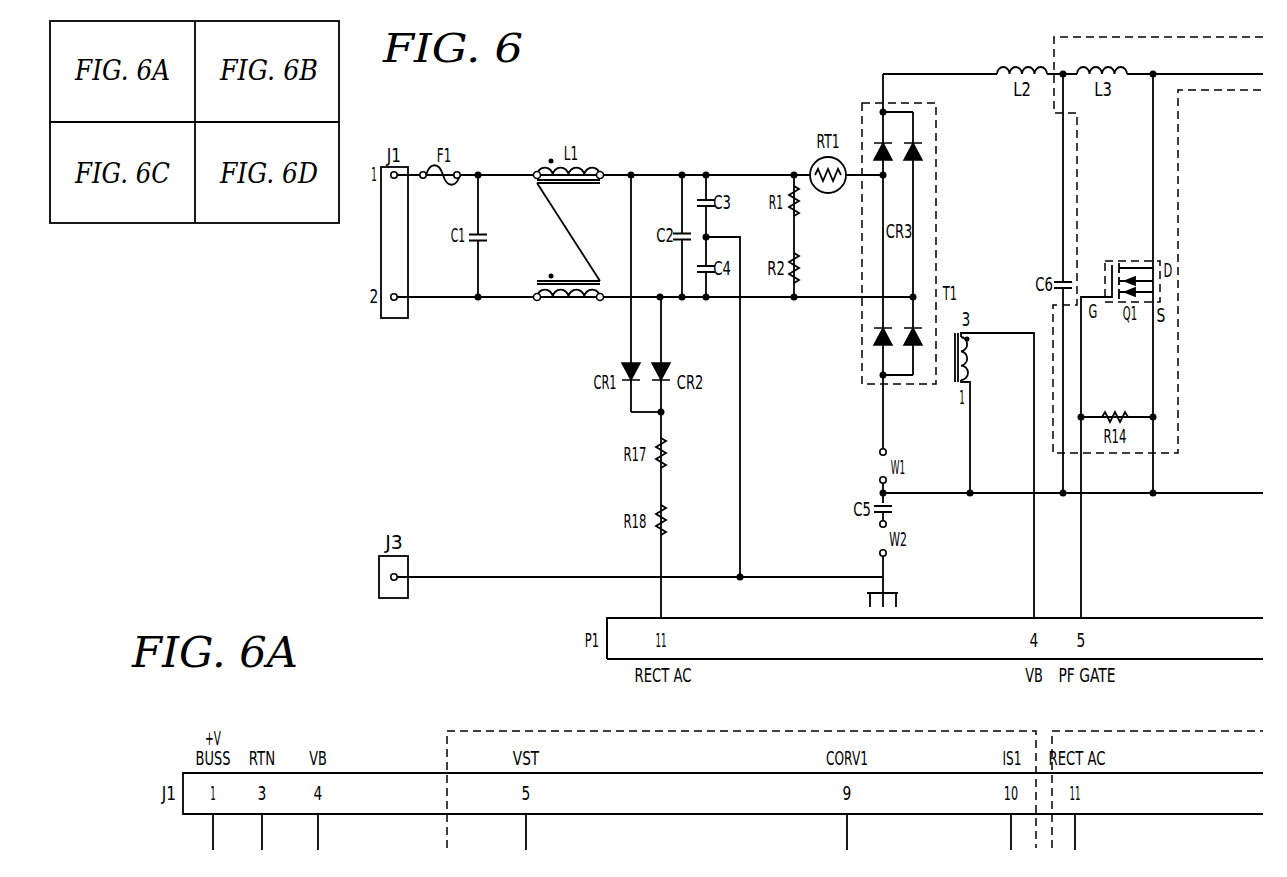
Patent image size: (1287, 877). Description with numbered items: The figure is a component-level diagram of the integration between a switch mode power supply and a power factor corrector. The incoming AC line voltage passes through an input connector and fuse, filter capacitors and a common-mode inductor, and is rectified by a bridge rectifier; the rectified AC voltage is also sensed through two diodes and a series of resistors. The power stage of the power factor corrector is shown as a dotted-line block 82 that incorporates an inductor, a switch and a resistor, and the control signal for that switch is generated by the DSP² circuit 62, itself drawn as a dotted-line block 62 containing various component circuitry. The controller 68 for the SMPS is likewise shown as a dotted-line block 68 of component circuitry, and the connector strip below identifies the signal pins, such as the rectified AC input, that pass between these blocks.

In FIG. 6, the power stage of the power factor corrector 82 is at (1238, 92).
In FIG. 6A, the controller for the SMPS 68 is at (510, 731).
In FIG. 6A, the DSP² circuit 62 is at (1163, 728).